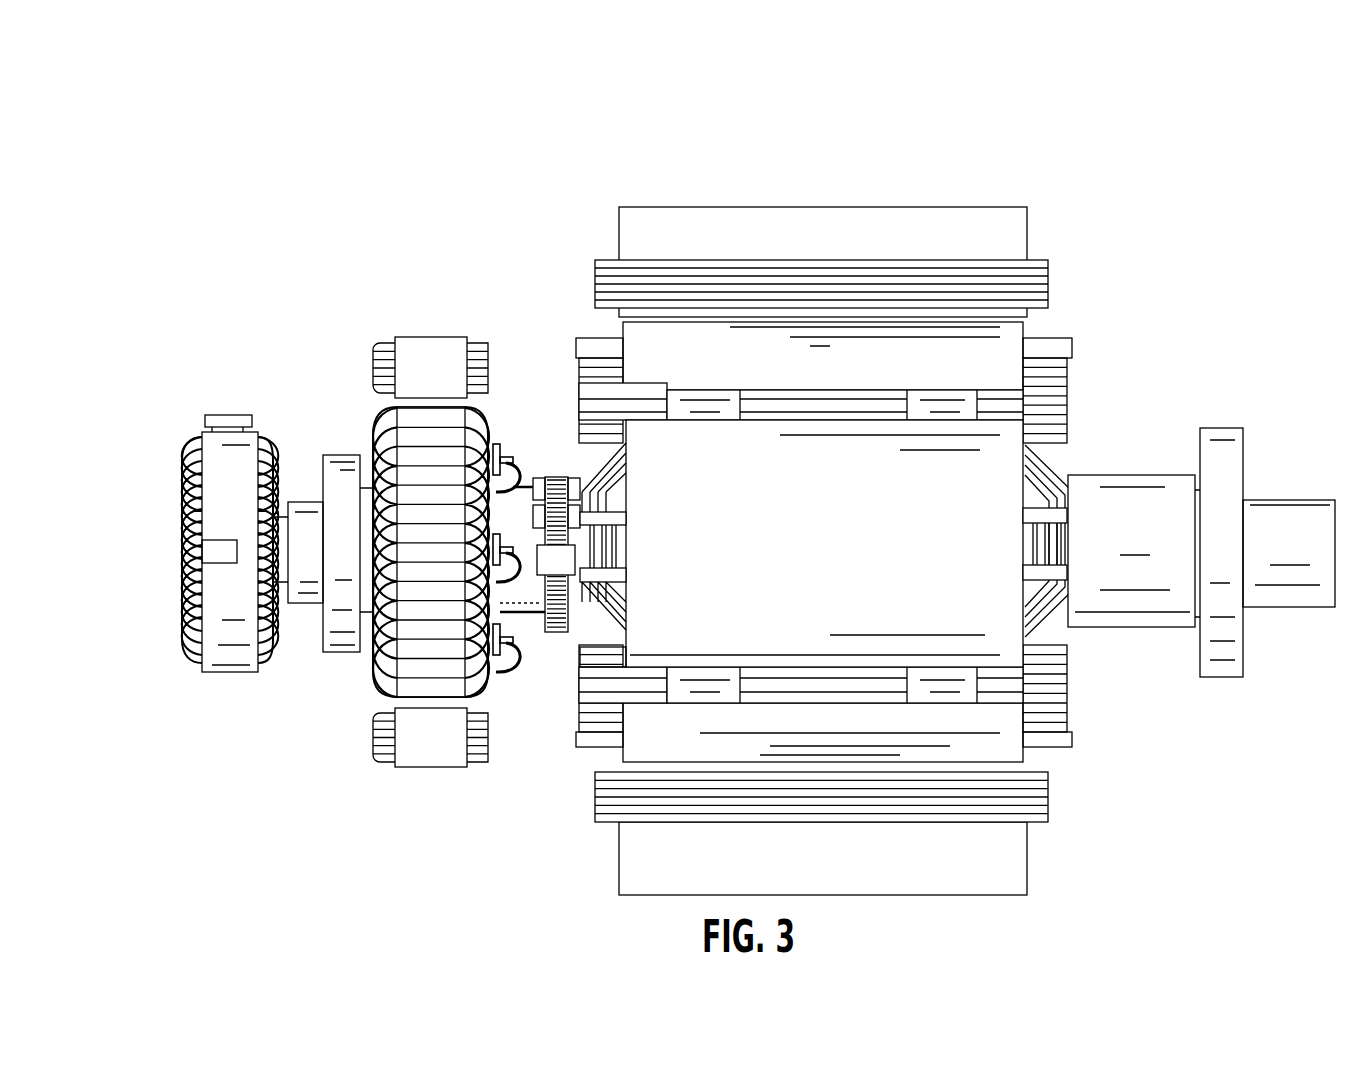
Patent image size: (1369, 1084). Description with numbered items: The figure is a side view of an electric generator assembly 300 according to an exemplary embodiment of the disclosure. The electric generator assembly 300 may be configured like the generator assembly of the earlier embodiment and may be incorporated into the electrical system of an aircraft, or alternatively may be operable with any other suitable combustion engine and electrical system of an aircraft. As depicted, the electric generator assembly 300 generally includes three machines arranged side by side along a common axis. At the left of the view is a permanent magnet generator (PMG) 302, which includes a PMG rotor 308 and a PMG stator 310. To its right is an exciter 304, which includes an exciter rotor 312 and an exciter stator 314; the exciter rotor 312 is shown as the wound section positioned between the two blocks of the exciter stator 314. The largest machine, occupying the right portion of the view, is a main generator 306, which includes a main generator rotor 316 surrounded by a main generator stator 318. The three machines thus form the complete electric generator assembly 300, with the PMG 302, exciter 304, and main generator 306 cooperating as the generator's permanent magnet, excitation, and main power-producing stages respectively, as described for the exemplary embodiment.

The electric generator assembly 300 is at (1157, 145).
The permanent magnet generator 302 is at (174, 399).
The exciter 304 is at (454, 282).
The main generator 306 is at (973, 170).
The PMG rotor 308 is at (225, 470).
The PMG stator 310 is at (228, 416).
The exciter rotor 312 is at (373, 665).
The exciter stator 314 is at (420, 770).
The main generator rotor 316 is at (990, 437).
The main generator stator 318 is at (1048, 287).